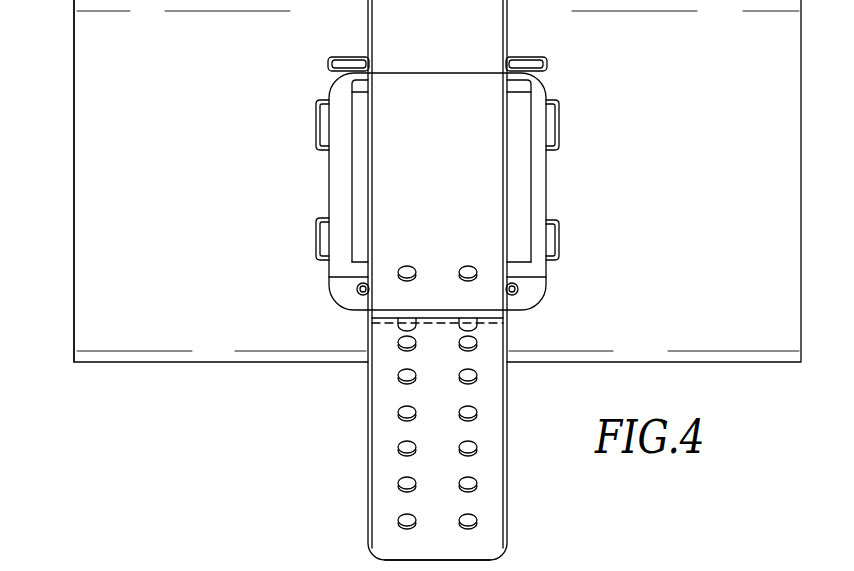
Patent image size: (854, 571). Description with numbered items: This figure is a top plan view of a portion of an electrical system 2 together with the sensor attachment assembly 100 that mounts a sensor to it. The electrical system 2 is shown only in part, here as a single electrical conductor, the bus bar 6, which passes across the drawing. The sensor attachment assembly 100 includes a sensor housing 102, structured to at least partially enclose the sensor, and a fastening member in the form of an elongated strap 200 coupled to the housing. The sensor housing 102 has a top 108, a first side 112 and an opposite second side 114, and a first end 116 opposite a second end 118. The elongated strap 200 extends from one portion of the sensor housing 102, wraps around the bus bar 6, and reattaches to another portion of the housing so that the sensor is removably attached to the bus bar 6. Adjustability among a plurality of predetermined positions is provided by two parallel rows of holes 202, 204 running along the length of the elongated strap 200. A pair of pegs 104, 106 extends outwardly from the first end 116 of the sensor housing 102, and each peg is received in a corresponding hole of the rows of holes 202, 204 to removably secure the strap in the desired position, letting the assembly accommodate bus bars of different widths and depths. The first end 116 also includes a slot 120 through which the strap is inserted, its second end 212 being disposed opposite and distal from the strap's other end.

The electrical system 2 is at (222, 438).
The bus bar 6 is at (85, 52).
The sensor attachment assembly 100 is at (638, 92).
The sensor housing 102 is at (297, 113).
The peg 104 is at (415, 318).
The peg 106 is at (462, 318).
The top 108 is at (355, 190).
The first side 112 is at (325, 146).
The second side 114 is at (547, 177).
The first end 116 is at (510, 307).
The second end 118 is at (367, 57).
The slot 120 is at (357, 288).
The elongated strap 200 is at (377, 427).
The holes 202 is at (403, 268).
The holes 204 is at (477, 268).
The second end 212 is at (531, 556).